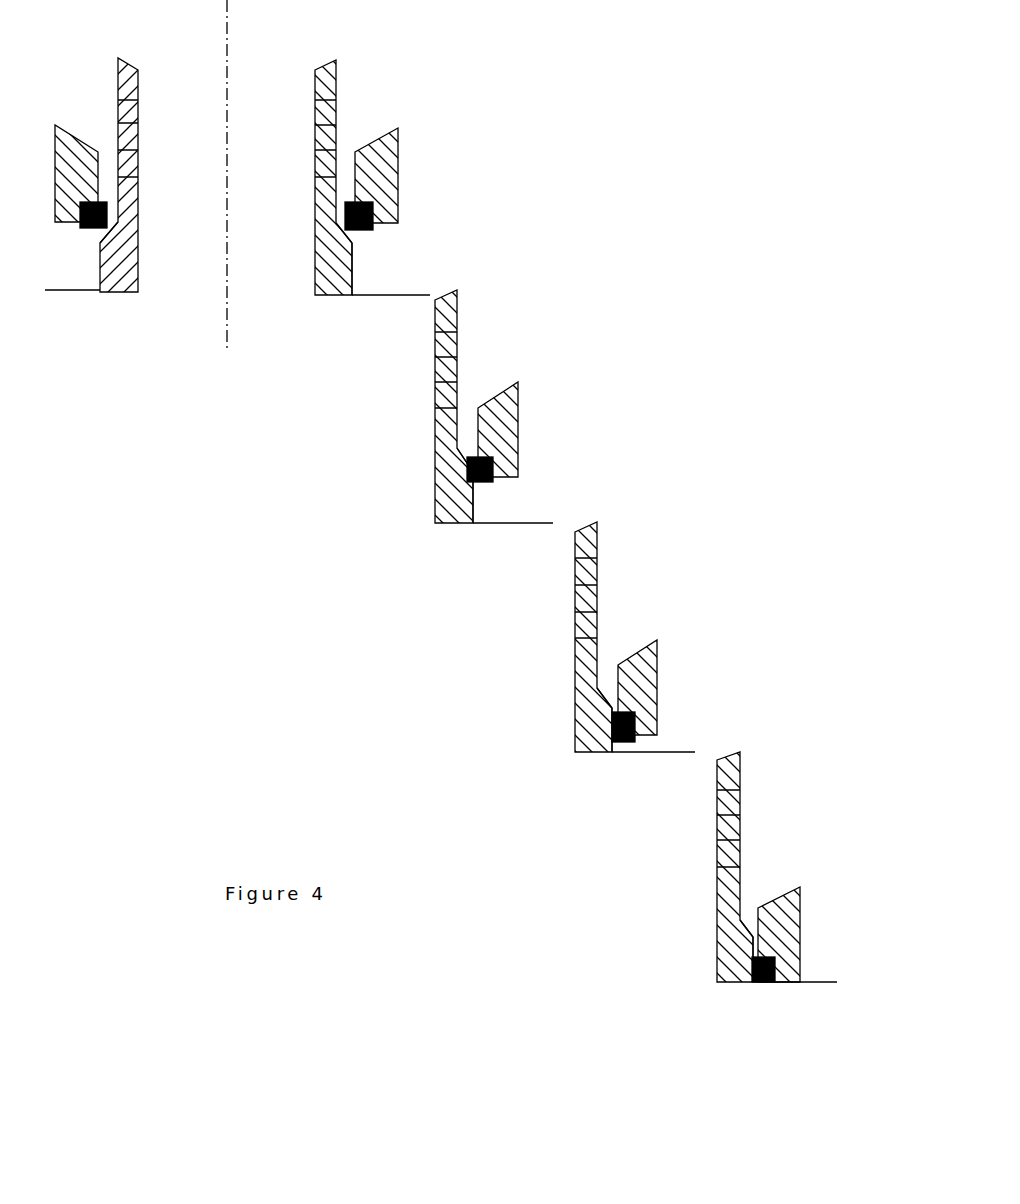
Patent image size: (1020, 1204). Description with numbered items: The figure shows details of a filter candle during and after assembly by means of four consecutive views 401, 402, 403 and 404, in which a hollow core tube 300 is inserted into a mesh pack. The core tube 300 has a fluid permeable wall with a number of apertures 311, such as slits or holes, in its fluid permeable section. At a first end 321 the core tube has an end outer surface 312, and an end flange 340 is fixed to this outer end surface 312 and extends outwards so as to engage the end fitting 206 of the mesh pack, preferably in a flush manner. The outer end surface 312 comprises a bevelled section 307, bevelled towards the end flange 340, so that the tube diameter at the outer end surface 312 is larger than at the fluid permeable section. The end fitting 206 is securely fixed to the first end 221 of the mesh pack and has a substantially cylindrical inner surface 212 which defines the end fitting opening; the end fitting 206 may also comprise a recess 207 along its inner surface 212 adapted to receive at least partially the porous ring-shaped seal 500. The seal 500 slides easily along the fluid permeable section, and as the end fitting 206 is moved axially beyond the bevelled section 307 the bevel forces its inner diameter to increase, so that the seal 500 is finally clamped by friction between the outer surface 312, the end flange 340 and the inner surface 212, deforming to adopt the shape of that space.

The core tube 300 is at (312, 87).
The apertures 311 is at (315, 161).
The ring-shaped seal 500 is at (345, 216).
The bevelled section 307 is at (110, 222).
The first end of the core tube 321 is at (298, 272).
The end flange 340 is at (320, 303).
The inner surface of the end fitting 212 is at (345, 157).
The end fitting 206 is at (380, 155).
The recess 207 is at (378, 197).
The first end of the mesh pack 221 is at (408, 205).
The end outer surface 312 is at (362, 265).
The first consecutive view 401 is at (537, 197).
The second consecutive view 402 is at (643, 415).
The third consecutive view 403 is at (712, 557).
The fourth consecutive view 404 is at (835, 780).